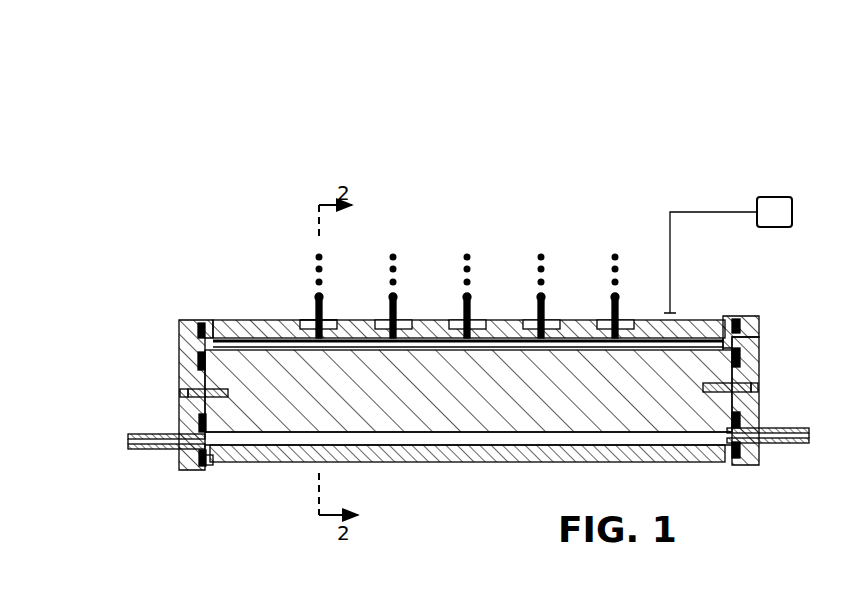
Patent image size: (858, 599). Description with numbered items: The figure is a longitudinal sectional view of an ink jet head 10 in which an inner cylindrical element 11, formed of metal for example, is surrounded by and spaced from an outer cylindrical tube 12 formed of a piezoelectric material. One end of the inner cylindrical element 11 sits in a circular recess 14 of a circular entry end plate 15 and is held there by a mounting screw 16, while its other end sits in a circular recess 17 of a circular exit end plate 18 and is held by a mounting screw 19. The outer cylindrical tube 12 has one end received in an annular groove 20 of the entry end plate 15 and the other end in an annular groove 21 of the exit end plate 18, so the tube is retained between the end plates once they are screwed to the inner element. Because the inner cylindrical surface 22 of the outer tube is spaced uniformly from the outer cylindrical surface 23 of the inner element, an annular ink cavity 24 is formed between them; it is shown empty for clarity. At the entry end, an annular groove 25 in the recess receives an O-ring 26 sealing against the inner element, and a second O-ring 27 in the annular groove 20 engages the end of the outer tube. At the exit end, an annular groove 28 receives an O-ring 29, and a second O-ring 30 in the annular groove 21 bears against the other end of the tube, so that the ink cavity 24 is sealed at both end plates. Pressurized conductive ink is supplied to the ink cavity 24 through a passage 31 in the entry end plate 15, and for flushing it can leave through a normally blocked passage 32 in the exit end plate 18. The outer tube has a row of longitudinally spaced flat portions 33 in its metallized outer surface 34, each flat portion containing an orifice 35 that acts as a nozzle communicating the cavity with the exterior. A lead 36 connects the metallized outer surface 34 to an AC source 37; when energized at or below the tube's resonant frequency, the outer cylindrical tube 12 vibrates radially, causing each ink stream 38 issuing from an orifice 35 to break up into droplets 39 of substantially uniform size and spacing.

The ink jet head 10 is at (177, 295).
The inner cylindrical element 11 is at (628, 434).
The outer cylindrical tube 12 is at (244, 317).
The circular recess 14 is at (720, 344).
The entry end plate 15 is at (762, 330).
The mounting screw 16 is at (758, 388).
The circular recess 17 is at (203, 328).
The exit end plate 18 is at (176, 366).
The mounting screw 19 is at (182, 392).
The annular groove 20 is at (736, 322).
The annular groove 21 is at (214, 460).
The inner cylindrical surface 22 is at (267, 341).
The outer cylindrical surface 23 is at (500, 433).
The annular ink cavity 24 is at (688, 447).
The annular groove 25 is at (742, 420).
The O-ring 26 is at (740, 358).
The second O-ring 27 is at (752, 318).
The annular groove 28 is at (202, 424).
The O-ring 29 is at (200, 360).
The second O-ring 30 is at (198, 464).
The passage 31 is at (840, 418).
The passage 32 is at (131, 441).
The flat portions 33 is at (328, 336).
The outer surface 34 is at (305, 321).
The orifice 35 is at (402, 336).
The lead 36 is at (720, 212).
The AC source 37 is at (794, 200).
The ink stream 38 is at (620, 320).
The droplets 39 is at (612, 256).